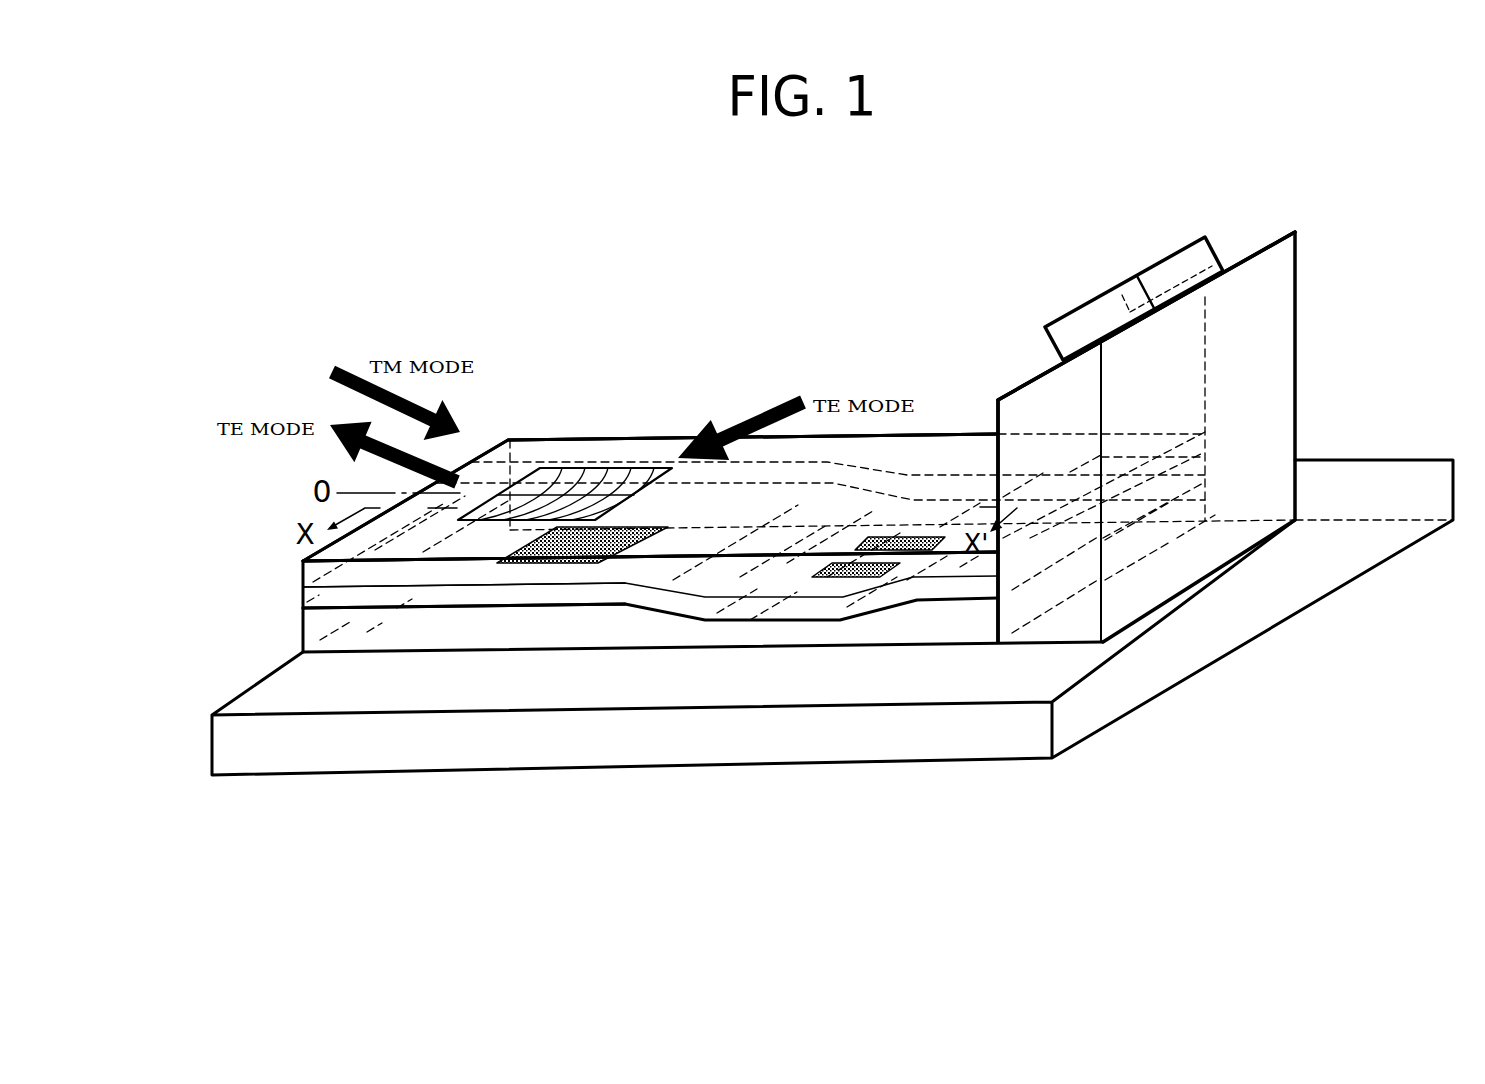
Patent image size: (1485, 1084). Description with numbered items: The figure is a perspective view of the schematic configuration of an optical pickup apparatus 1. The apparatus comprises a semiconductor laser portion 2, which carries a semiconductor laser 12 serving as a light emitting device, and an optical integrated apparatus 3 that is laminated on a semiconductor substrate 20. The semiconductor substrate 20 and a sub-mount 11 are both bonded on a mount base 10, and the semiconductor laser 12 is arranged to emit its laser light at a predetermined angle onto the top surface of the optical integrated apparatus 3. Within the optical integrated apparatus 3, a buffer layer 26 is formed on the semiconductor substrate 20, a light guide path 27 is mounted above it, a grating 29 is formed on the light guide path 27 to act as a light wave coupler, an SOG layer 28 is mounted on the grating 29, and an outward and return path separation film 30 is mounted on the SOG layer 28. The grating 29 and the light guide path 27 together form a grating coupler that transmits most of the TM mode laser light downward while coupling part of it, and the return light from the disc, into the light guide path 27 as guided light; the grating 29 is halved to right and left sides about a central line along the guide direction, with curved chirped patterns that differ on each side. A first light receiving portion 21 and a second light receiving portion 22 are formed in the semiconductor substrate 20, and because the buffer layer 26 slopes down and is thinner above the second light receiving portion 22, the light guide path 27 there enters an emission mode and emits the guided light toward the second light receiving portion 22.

The optical pickup apparatus 1 is at (902, 226).
The semiconductor laser portion 2 is at (1068, 288).
The optical integrated apparatus 3 is at (928, 412).
The mount base 10 is at (969, 747).
The sub-mount 11 is at (1287, 350).
The semiconductor laser 12 is at (1207, 260).
The semiconductor substrate 20 is at (305, 632).
The first light receiving portion 21 is at (534, 567).
The second light receiving portion 22 is at (833, 578).
The buffer layer 26 is at (304, 598).
The light guide path 27 is at (304, 572).
The SOG layer 28 is at (578, 517).
The grating 29 is at (604, 464).
The outward and return path separation film 30 is at (726, 448).